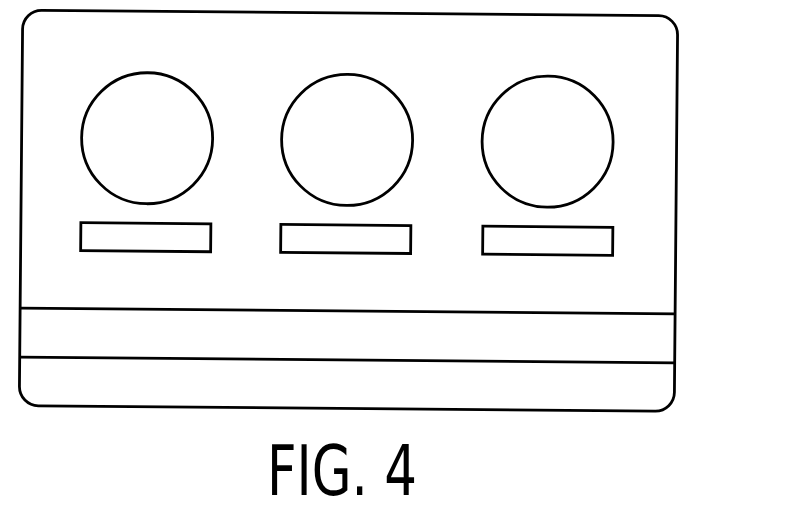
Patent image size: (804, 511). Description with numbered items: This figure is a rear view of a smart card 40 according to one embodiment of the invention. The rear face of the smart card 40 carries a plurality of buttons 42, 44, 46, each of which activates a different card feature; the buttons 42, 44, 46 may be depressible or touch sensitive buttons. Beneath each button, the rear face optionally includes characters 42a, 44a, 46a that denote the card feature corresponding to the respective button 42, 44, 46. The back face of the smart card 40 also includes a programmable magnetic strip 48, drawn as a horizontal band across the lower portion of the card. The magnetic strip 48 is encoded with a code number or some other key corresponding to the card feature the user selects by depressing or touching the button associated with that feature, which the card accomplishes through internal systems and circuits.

The smart card 40 is at (677, 130).
The button 42 is at (607, 112).
The characters 42a is at (558, 254).
The button 44 is at (405, 110).
The characters 44a is at (343, 253).
The button 46 is at (206, 107).
The characters 46a is at (123, 251).
The programmable magnetic strip 48 is at (661, 331).